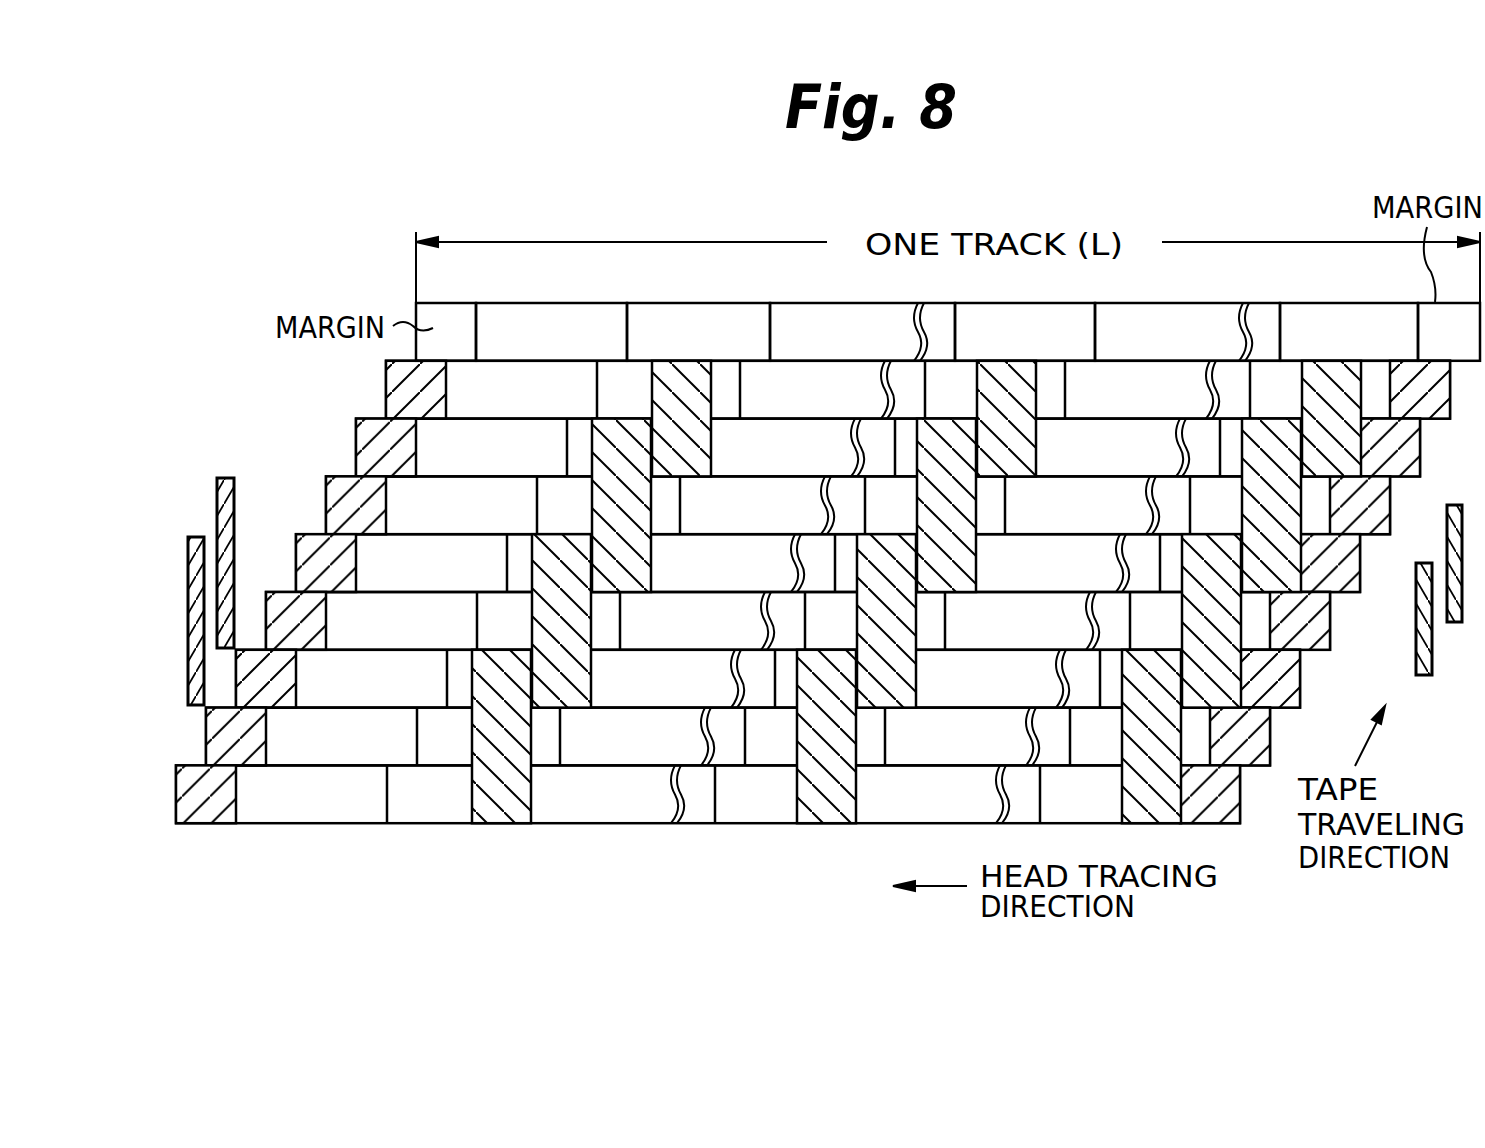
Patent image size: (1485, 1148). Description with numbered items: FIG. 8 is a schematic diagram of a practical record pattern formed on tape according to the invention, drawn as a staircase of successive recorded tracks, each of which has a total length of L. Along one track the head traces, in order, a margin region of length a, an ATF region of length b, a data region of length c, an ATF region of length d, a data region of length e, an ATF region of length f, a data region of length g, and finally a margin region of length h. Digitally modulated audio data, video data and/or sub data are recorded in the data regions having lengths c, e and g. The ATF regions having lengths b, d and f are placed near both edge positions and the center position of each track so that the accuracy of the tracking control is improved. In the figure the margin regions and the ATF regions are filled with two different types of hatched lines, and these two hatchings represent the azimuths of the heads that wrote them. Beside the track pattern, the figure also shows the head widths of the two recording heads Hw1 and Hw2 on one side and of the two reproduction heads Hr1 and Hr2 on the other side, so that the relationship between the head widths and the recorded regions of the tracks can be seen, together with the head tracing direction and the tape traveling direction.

The recording head Hw1 is at (192, 534).
The recording head Hw2 is at (226, 477).
The reproduction head Hr1 is at (1423, 677).
The reproduction head Hr2 is at (1455, 504).
The margin region length a is at (1449, 312).
The ATF region length b is at (1418, 272).
The data region length c is at (1280, 272).
The ATF region length d is at (1095, 272).
The data region length e is at (955, 272).
The ATF region length f is at (770, 272).
The data region length g is at (627, 272).
The margin region length h is at (476, 272).